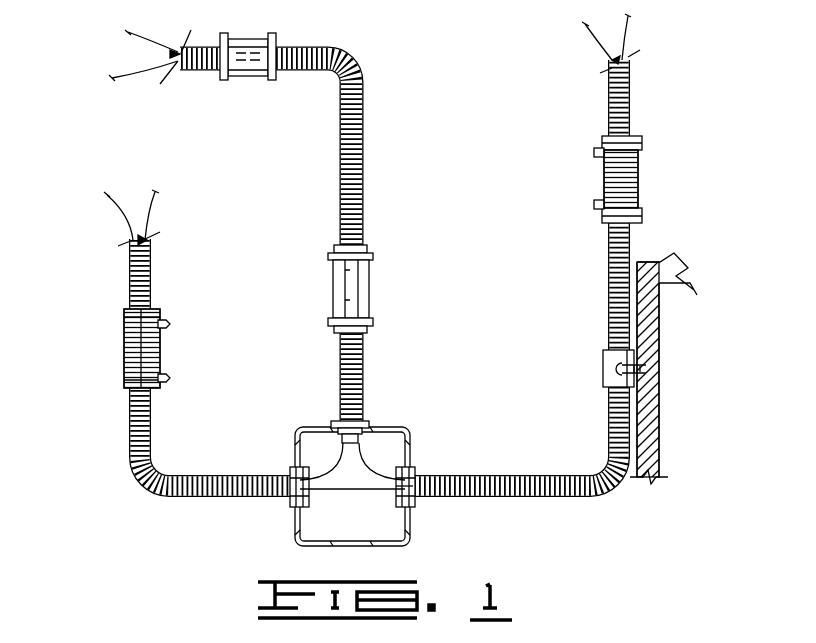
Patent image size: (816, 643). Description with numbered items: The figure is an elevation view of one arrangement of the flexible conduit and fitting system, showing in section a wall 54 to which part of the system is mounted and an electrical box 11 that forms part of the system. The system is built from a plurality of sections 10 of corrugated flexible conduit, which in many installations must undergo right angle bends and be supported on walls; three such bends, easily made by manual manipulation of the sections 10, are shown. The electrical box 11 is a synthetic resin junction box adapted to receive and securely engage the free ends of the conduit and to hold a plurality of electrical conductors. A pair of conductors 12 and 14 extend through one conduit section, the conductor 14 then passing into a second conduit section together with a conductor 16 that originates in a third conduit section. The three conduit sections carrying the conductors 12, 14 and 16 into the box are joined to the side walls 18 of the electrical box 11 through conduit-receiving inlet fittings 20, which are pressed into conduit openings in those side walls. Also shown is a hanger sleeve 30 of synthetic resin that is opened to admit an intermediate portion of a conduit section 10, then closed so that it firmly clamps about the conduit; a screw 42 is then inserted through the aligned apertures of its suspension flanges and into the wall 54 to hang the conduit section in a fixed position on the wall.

The conduit section 10 is at (364, 171).
The electrical box 11 is at (296, 526).
The conductor 12 is at (122, 218).
The conductor 14 is at (152, 205).
The conductor 16 is at (371, 468).
The side wall 18 is at (296, 448).
The conduit-receiving inlet fitting 20 is at (398, 498).
The hanger sleeve 30 is at (600, 364).
The screw 42 is at (620, 372).
The wall 54 is at (648, 322).